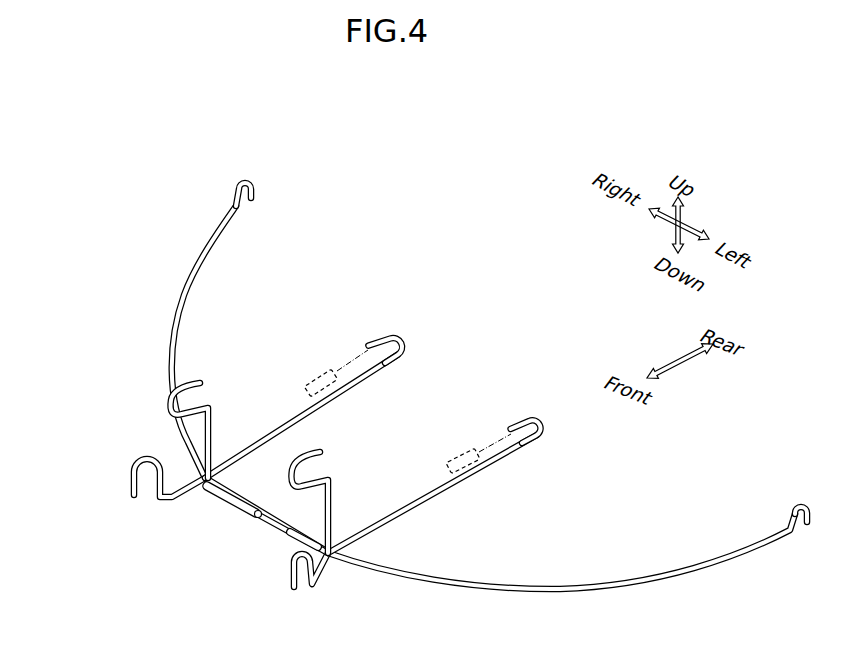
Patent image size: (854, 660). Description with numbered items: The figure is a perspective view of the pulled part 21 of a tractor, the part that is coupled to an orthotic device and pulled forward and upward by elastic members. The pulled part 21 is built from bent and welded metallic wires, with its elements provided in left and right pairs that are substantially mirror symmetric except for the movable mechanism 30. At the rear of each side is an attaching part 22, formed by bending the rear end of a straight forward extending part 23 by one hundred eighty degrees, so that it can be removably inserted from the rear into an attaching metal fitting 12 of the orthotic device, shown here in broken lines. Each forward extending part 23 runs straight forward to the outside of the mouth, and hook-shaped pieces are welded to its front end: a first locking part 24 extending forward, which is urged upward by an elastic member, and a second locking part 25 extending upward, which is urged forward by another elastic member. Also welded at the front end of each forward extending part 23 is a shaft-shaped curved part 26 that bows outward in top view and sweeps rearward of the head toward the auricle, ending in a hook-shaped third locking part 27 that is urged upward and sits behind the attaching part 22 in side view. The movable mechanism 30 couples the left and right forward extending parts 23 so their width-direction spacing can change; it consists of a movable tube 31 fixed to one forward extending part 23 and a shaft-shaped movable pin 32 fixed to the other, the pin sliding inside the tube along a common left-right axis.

The attaching metal fitting 12 is at (313, 376).
The pulled part 21 is at (79, 329).
The attaching part 22 is at (388, 338).
The forward extending part 23 is at (265, 440).
The first locking part 24 is at (130, 474).
The second locking part 25 is at (176, 404).
The curved part 26 is at (187, 270).
The third locking part 27 is at (239, 180).
The movable mechanism 30 is at (242, 528).
The movable tube 31 is at (225, 505).
The movable pin 32 is at (290, 534).